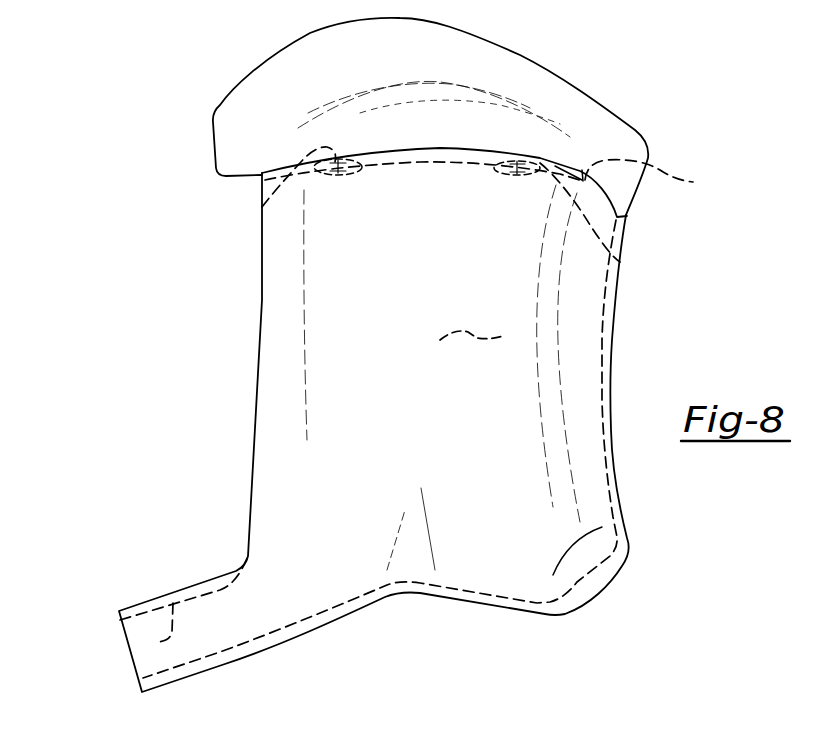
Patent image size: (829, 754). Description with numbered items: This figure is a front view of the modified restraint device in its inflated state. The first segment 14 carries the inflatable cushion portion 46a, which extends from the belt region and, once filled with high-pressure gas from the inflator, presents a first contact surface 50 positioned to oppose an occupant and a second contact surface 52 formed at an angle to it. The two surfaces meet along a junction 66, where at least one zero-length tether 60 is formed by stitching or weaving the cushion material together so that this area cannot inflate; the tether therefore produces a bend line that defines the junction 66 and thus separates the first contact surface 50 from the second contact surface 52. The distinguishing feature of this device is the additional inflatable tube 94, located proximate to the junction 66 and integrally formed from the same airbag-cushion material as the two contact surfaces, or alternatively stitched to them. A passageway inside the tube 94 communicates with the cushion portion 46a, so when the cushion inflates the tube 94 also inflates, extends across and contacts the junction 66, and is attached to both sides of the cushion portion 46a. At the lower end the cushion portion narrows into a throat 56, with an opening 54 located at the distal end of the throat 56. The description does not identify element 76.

The first segment 14 is at (199, 72).
The tube 94 is at (600, 116).
The second contact surface 52 is at (437, 224).
The zero-length tether 60 is at (262, 207).
The junction 66 is at (654, 177).
The cushion portion 46a is at (630, 235).
The first contact surface 50 is at (476, 334).
The throat 56 is at (200, 588).
The opening 54 is at (155, 642).
The bottom hem 76 is at (513, 608).